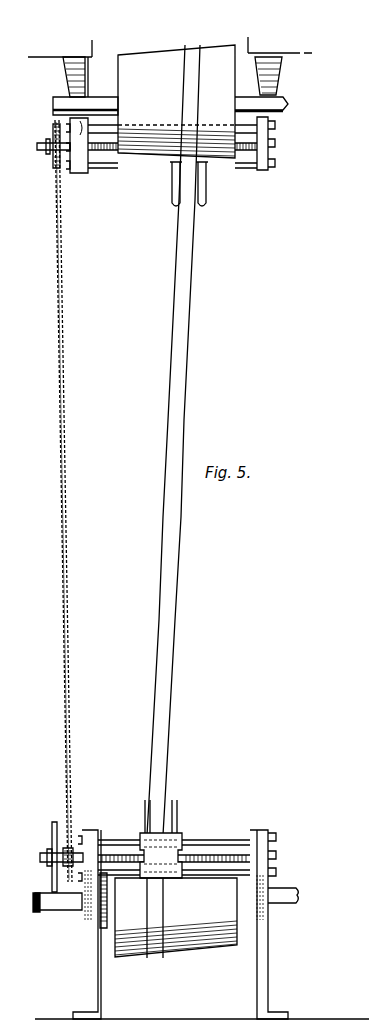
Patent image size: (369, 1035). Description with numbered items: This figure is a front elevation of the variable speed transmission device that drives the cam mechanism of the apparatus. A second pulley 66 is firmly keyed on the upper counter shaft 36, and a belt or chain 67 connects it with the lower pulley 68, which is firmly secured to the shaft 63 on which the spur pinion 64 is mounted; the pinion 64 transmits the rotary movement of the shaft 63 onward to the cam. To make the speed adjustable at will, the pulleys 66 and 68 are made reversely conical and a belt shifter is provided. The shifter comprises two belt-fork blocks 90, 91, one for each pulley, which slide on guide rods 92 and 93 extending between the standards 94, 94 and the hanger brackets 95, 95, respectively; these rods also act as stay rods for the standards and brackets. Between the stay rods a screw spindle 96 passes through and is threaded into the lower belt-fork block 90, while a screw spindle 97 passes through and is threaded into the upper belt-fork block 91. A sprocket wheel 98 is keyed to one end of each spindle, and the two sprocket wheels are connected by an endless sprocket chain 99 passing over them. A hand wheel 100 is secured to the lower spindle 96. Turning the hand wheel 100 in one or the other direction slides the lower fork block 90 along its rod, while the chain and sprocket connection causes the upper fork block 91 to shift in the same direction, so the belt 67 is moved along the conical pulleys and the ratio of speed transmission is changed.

The upper counter shaft 36 is at (100, 97).
The shaft 63 is at (60, 910).
The pinion 64 is at (105, 928).
The second pulley 66 is at (176, 101).
The belt or chain 67 is at (180, 580).
The lower pulley 68 is at (176, 917).
The belt-fork block 90 is at (174, 845).
The belt-fork block 91 is at (207, 172).
The guide rod 92 is at (221, 872).
The guide rod 93 is at (138, 165).
The standards 94 is at (101, 1000).
The hanger brackets 95 is at (65, 77).
The screw spindle 96 is at (123, 855).
The screw spindle 97 is at (102, 153).
The sprocket wheel 98 is at (53, 160).
The sprocket chain 99 is at (63, 487).
The hand wheel 100 is at (56, 848).